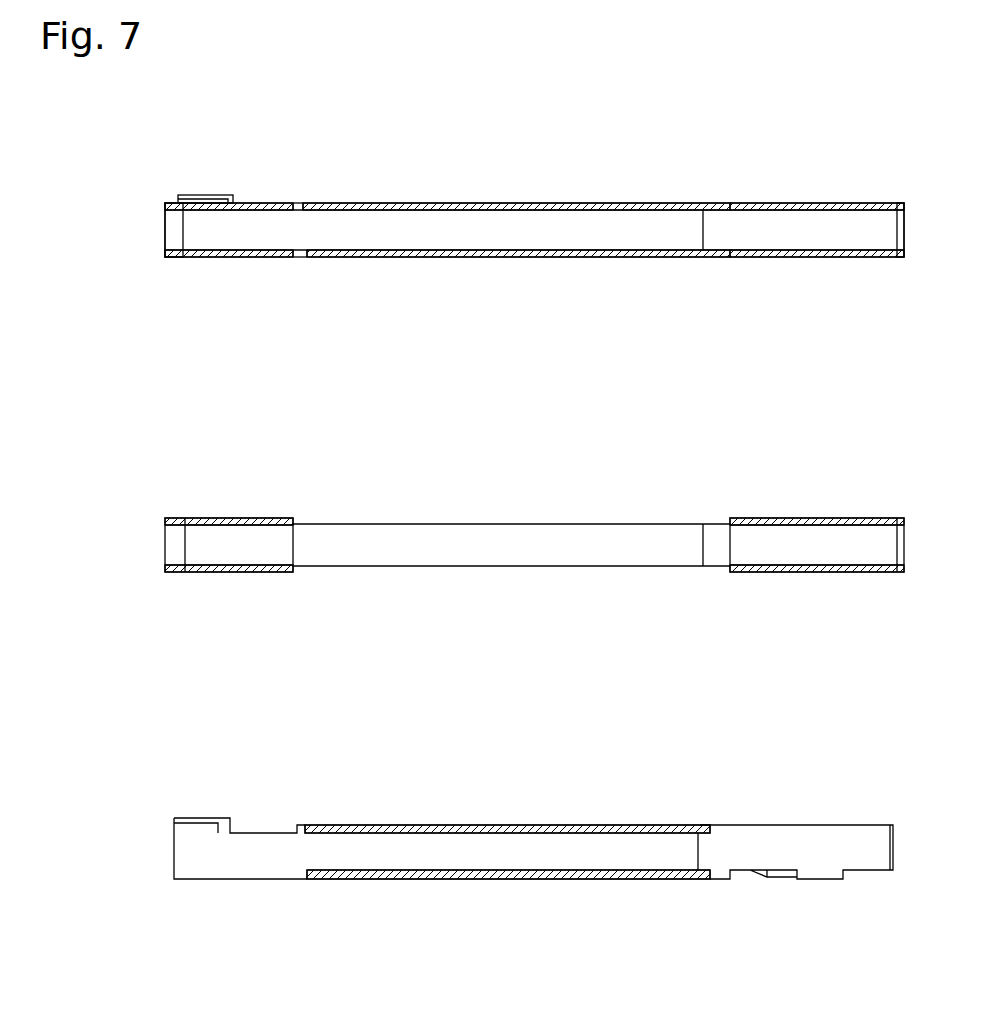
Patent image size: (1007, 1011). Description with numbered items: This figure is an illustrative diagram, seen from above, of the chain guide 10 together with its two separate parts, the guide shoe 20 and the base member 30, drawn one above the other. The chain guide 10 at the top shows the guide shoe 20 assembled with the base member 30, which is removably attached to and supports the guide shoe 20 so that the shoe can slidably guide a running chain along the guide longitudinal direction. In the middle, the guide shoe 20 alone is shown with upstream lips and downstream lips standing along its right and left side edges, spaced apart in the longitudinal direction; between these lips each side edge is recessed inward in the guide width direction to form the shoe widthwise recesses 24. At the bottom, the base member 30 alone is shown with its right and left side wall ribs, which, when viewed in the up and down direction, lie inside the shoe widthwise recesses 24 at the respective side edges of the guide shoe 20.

The chain guide 10 is at (150, 160).
The guide shoe 20 is at (150, 485).
The shoe widthwise recesses 24 is at (493, 518).
The base member 30 is at (150, 800).